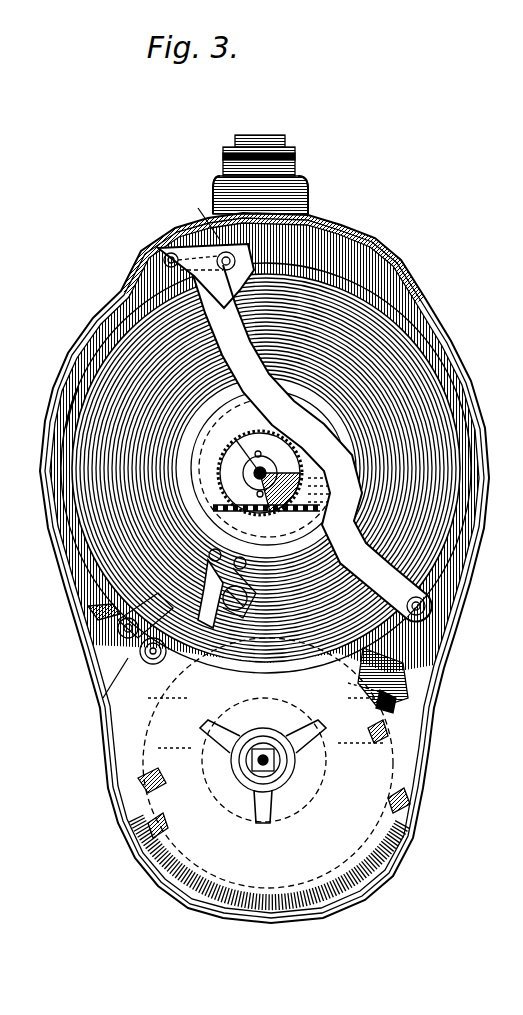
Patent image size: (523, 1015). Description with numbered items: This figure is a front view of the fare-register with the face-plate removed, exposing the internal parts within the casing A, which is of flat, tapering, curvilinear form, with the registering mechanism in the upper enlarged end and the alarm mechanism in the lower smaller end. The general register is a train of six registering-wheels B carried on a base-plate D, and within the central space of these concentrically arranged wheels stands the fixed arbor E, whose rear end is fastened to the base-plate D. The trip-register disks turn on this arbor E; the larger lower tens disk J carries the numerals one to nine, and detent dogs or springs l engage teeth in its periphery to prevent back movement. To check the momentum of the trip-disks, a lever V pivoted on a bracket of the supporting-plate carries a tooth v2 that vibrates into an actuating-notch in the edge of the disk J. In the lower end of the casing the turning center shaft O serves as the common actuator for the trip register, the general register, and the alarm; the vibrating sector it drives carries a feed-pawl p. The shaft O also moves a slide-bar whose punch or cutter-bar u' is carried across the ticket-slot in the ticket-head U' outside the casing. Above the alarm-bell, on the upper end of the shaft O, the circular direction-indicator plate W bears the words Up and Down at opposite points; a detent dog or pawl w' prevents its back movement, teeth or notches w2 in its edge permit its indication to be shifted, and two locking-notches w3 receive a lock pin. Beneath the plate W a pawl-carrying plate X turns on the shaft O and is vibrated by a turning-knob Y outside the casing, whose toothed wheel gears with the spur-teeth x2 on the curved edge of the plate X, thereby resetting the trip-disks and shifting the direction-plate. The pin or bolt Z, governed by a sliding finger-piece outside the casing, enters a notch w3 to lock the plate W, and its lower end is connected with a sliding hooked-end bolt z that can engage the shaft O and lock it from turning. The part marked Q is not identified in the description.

The casing A is at (264, 568).
The ticket-head U' is at (274, 174).
The punch or cutter-bar u' is at (200, 215).
The registering-wheels B is at (112, 482).
The tens disk J is at (86, 420).
The turning-knob Y is at (266, 468).
The pawl-carrying plate or arm X is at (268, 468).
The detent dogs or springs l is at (445, 472).
The shaft, axle, or arbor E is at (240, 440).
The spur-teeth x2 is at (266, 520).
The pawl lever Q is at (122, 649).
The lever V is at (82, 604).
The tooth v2 is at (100, 630).
The feed-pawl p is at (198, 630).
The base-plate D is at (400, 650).
The sliding hooked end bolt z is at (392, 698).
The pin or bolt Z is at (362, 681).
The direction-indicator plate W is at (269, 770).
The turning center shaft O is at (270, 756).
The detent dog or pawl w' is at (236, 760).
The teeth or notches w2 is at (140, 768).
The locking-notch w3 is at (252, 774).